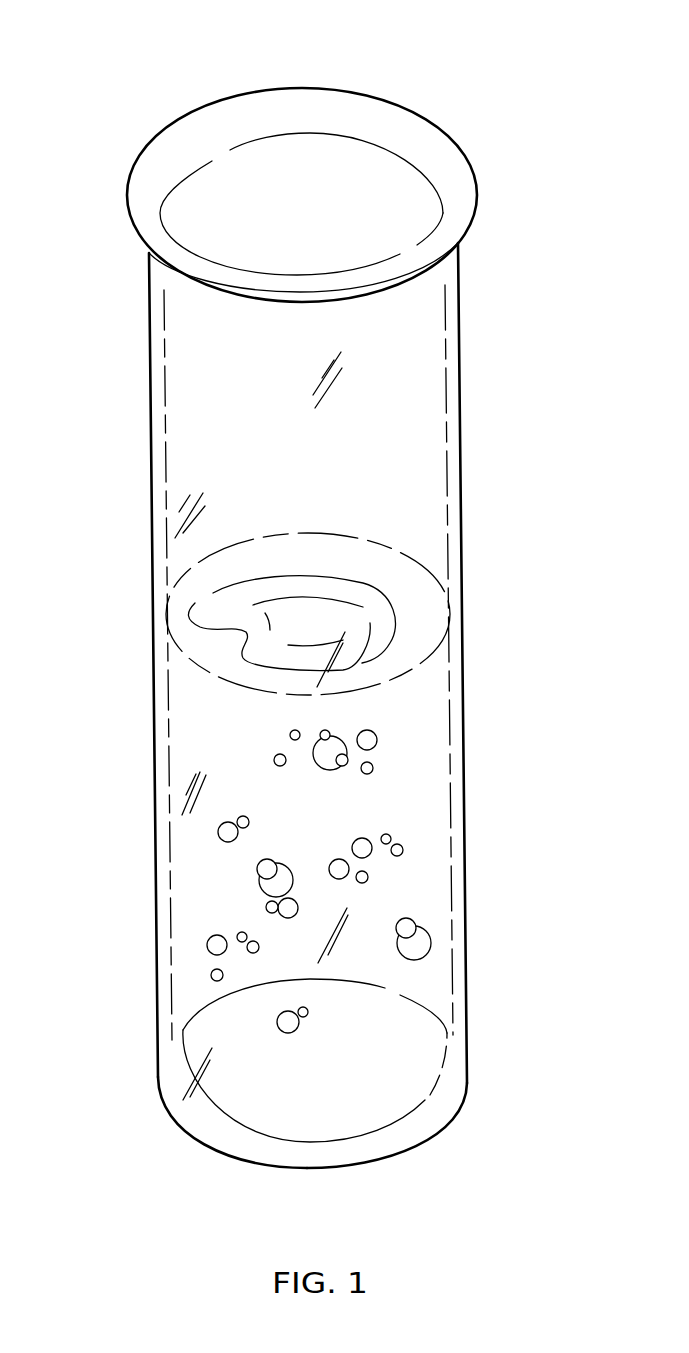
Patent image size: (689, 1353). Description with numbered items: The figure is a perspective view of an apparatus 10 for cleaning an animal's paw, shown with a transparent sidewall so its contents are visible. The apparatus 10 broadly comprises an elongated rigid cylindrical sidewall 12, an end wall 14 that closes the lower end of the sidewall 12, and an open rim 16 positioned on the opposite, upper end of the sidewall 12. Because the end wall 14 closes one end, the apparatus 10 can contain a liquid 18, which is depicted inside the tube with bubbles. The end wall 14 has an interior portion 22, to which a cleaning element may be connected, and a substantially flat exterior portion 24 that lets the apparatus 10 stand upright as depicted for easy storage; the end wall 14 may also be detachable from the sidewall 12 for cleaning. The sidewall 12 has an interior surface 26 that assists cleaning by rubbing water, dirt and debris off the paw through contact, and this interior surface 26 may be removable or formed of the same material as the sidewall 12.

The apparatus 10 is at (149, 52).
The sidewall 12 is at (148, 481).
The end wall 14 is at (231, 1157).
The open rim 16 is at (442, 186).
The liquid 18 is at (228, 873).
The interior portion 22 is at (360, 1042).
The exterior portion 24 is at (409, 1150).
The interior surface 26 is at (468, 745).